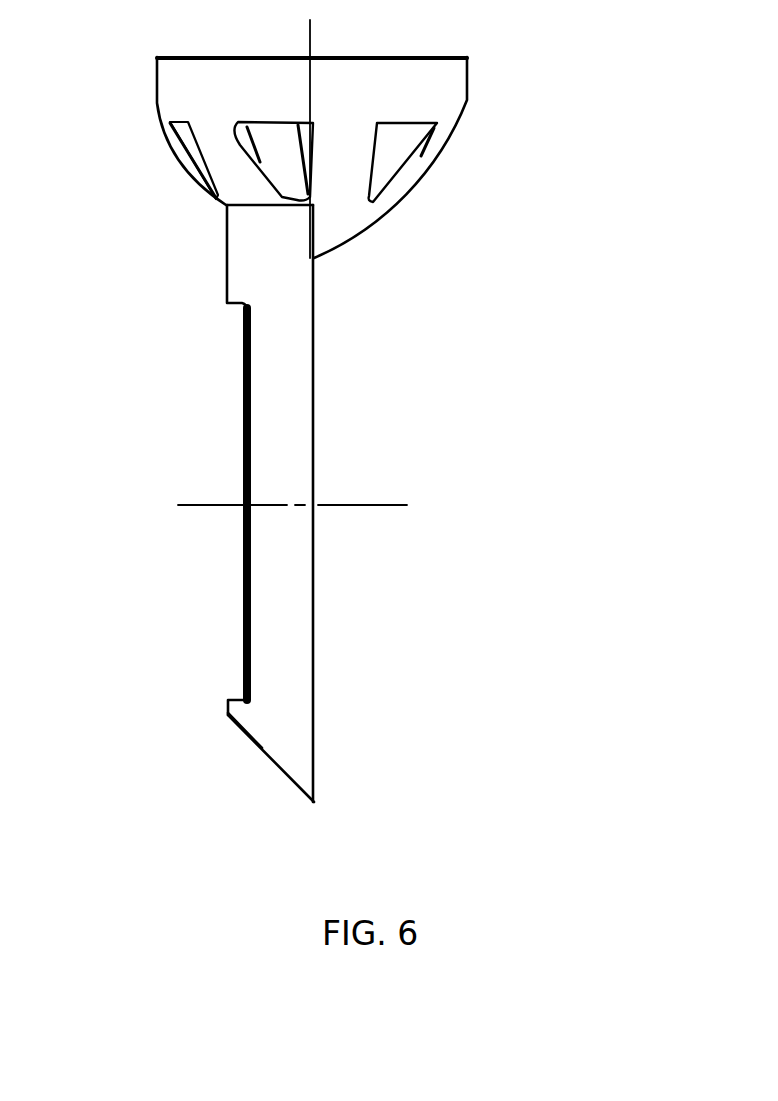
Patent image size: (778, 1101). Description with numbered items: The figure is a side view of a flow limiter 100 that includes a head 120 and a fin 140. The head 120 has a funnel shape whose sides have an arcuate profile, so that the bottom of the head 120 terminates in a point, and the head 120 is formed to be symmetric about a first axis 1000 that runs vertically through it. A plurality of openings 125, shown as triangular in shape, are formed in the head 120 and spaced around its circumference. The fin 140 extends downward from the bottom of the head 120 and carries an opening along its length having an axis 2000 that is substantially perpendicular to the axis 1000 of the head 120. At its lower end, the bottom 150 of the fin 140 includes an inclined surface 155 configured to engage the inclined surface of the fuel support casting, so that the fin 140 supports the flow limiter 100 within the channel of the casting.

The flow limiter 100 is at (361, 409).
The head 120 is at (207, 88).
The openings 125 is at (275, 163).
The fin 140 is at (277, 462).
The bottom of the fin 150 is at (282, 733).
The inclined surface 155 is at (258, 747).
The first axis 1000 is at (312, 56).
The axis 2000 is at (397, 504).